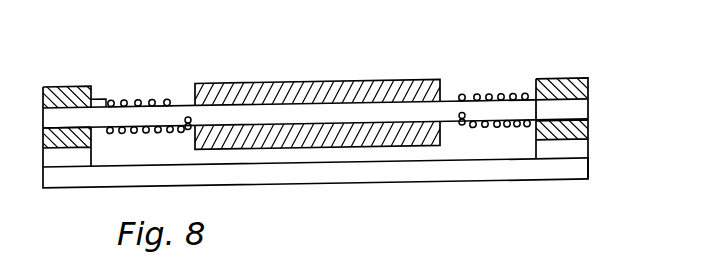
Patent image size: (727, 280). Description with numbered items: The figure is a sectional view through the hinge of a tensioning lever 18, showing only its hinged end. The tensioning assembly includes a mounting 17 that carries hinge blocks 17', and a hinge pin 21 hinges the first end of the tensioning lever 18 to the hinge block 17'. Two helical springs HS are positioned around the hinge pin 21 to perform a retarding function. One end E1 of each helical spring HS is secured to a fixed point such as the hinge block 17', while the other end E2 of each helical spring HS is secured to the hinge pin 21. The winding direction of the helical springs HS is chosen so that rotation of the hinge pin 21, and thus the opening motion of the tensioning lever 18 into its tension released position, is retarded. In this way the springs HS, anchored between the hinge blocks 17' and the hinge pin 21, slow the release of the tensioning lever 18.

The mounting 17 is at (315, 187).
The hinge block 17' is at (320, 104).
The tensioning lever 18 is at (366, 82).
The hinge pin 21 is at (573, 111).
The one end of helical spring E1 is at (103, 100).
The other end of helical spring E2 is at (186, 130).
The helical spring HS is at (122, 98).